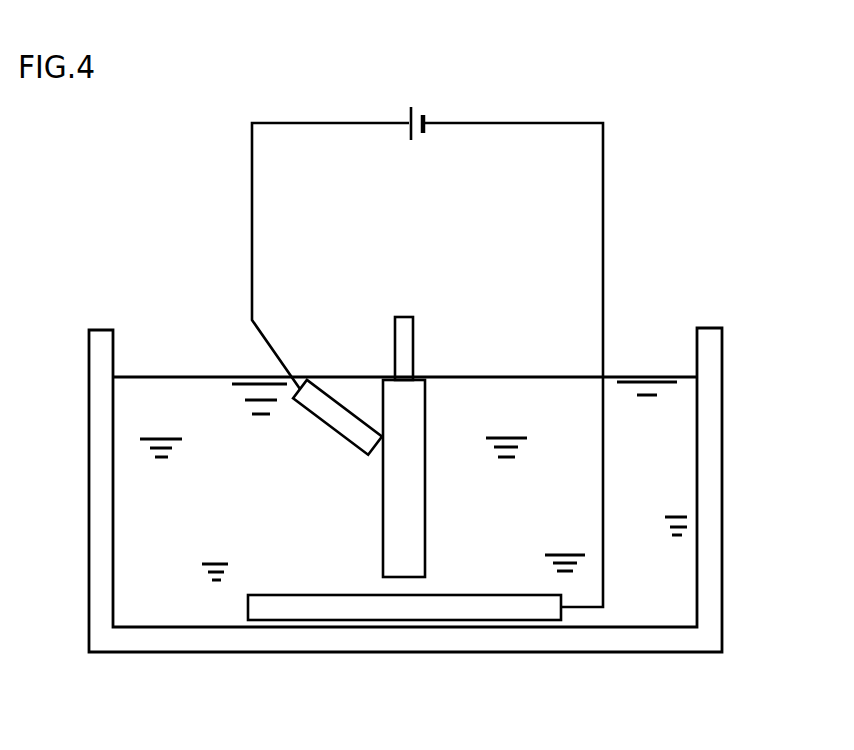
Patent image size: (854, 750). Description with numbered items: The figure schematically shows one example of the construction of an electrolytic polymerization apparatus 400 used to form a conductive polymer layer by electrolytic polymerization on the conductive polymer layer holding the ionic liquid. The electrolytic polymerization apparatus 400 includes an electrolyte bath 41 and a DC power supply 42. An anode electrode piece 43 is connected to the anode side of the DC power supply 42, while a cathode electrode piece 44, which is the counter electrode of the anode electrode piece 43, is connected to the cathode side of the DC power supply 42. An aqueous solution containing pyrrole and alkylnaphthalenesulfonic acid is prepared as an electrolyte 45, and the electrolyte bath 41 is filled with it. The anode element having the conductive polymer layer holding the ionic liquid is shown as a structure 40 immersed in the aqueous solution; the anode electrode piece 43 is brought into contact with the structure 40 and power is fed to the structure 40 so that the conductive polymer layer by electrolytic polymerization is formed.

The electrolytic polymerization apparatus 400 is at (429, 403).
The structure 40 is at (420, 315).
The electrolyte bath 41 is at (705, 510).
The DC power supply 42 is at (418, 141).
The anode electrode piece 43 is at (337, 432).
The cathode electrode piece 44 is at (520, 620).
The electrolyte 45 is at (677, 445).